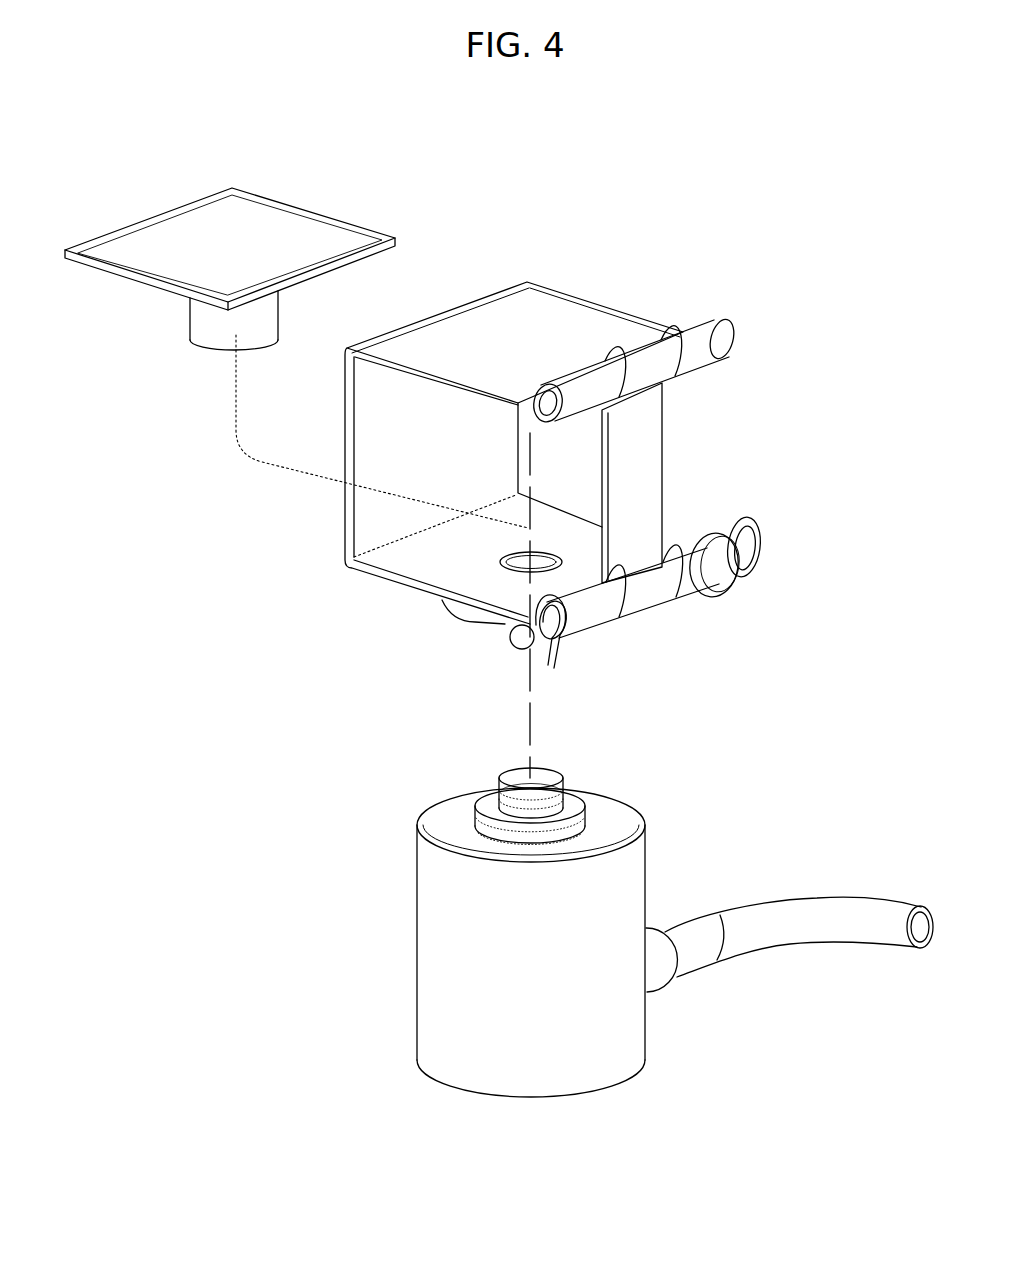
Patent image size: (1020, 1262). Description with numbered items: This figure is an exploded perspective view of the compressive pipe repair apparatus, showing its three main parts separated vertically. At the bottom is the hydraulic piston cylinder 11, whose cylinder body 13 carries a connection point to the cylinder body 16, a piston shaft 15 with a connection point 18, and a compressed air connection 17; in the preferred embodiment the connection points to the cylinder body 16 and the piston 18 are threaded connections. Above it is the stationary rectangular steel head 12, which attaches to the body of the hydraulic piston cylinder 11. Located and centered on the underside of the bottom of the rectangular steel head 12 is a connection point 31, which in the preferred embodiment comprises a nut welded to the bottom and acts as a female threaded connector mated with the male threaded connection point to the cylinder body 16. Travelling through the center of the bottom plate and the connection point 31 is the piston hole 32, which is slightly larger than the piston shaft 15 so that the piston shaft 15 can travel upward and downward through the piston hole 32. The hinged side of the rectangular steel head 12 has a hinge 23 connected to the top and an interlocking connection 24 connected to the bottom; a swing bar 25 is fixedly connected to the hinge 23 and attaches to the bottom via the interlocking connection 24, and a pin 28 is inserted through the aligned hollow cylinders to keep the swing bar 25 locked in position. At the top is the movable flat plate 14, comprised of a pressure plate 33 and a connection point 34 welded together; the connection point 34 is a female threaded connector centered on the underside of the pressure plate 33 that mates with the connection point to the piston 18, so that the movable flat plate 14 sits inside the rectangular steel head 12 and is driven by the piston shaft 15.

The hydraulic piston cylinder 11 is at (597, 895).
The rectangular steel head 12 is at (537, 496).
The cylinder body 13 is at (453, 942).
The movable flat plate 14 is at (296, 327).
The piston shaft 15 is at (576, 755).
The connection point to the cylinder body 16 is at (593, 798).
The compressed air connection 17 is at (789, 888).
The connection point to the piston 18 is at (467, 758).
The hinge 23 is at (633, 330).
The interlocking connection 24 is at (656, 618).
The swing bar 25 is at (716, 483).
The pin 28 is at (758, 530).
The connection point 31 is at (433, 644).
The aperture 32 is at (403, 534).
The pressure plate 33 is at (230, 223).
The connection point 34 is at (310, 409).